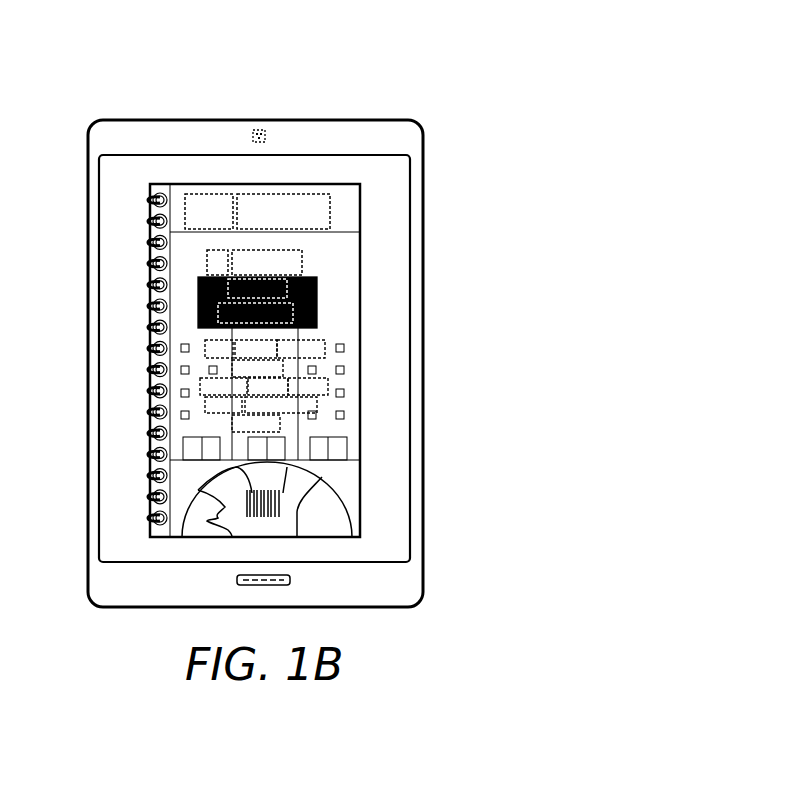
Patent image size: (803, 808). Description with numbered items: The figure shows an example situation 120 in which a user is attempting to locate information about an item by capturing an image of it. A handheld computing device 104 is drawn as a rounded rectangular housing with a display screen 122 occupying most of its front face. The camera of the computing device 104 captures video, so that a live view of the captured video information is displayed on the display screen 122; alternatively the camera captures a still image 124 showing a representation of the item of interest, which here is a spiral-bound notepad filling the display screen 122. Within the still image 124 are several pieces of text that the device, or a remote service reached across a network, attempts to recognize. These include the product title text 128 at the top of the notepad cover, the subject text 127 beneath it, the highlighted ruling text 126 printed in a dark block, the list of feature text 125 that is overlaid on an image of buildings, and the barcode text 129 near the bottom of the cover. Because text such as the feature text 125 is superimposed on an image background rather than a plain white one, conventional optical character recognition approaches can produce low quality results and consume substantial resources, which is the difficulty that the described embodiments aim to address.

The example situation 120 is at (413, 94).
The computing device 104 is at (128, 120).
The display screen 122 is at (97, 195).
The still image 124 is at (359, 190).
The text 128 is at (330, 228).
The text 127 is at (302, 268).
The text 126 is at (317, 312).
The text 125 is at (337, 394).
The text 129 is at (280, 520).